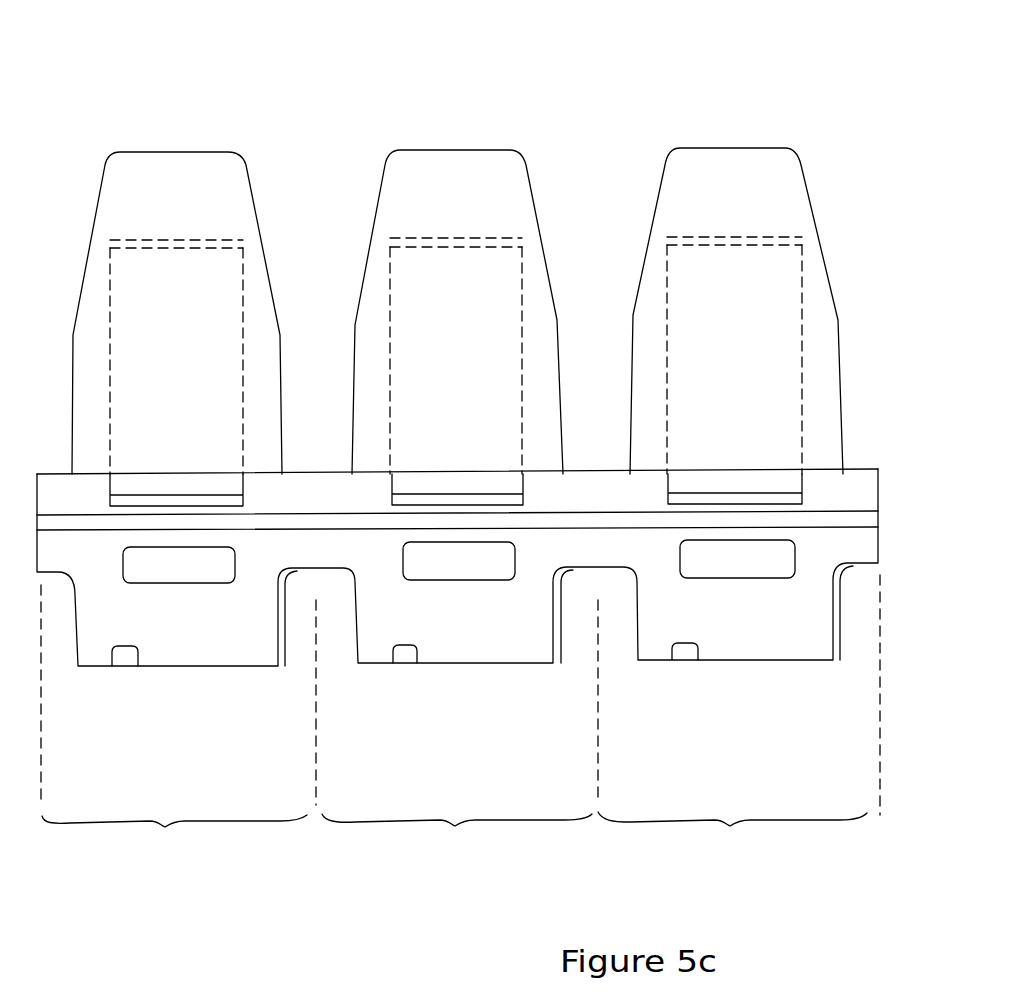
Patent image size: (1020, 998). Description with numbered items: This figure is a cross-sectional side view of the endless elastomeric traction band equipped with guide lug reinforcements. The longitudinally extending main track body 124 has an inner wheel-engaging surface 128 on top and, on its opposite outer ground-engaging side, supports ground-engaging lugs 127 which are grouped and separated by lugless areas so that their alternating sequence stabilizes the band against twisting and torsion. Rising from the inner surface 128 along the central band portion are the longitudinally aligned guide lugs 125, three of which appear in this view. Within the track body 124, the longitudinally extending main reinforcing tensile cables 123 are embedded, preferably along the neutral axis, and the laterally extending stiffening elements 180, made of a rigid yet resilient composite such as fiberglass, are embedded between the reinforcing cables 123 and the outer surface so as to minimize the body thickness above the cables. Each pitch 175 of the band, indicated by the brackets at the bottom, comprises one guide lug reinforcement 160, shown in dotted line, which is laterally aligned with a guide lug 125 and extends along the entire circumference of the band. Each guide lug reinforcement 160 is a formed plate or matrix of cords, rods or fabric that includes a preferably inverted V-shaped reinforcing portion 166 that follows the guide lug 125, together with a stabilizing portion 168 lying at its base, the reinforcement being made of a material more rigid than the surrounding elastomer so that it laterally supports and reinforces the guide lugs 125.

The inner wheel-engaging surface 128 is at (600, 110).
The guide lug 125 is at (235, 172).
The reinforcing portion 166 is at (393, 241).
The guide lug reinforcement 160 is at (378, 356).
The stabilizing portion 168 is at (390, 500).
The main reinforcing tensile cable 123 is at (563, 518).
The ground-engaging lug 127 is at (183, 645).
The main track body 124 is at (288, 558).
The stiffening element 180 is at (148, 572).
The pitch 175 is at (163, 842).